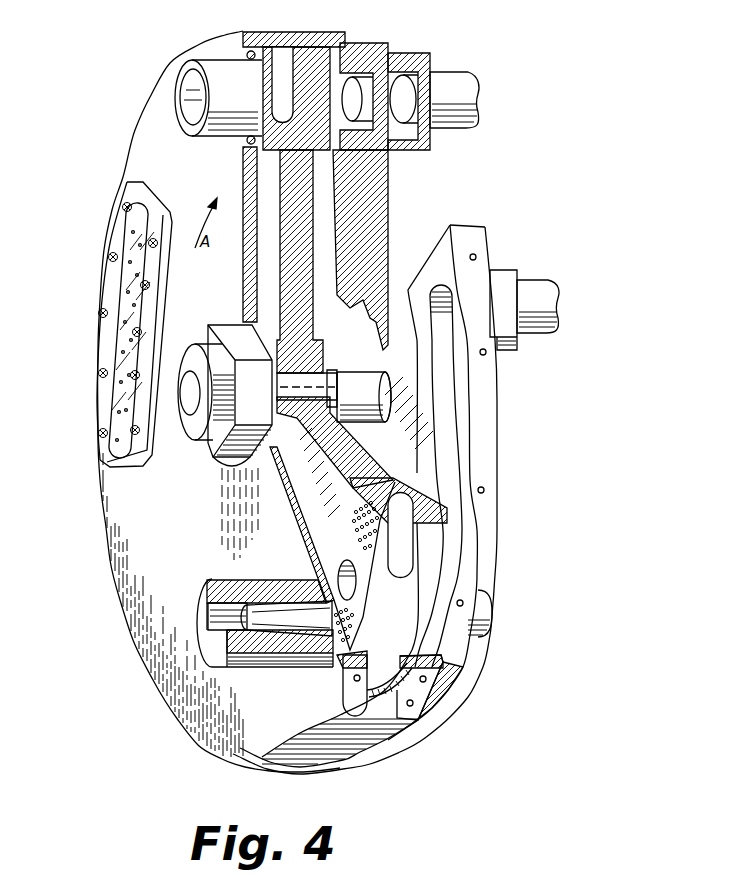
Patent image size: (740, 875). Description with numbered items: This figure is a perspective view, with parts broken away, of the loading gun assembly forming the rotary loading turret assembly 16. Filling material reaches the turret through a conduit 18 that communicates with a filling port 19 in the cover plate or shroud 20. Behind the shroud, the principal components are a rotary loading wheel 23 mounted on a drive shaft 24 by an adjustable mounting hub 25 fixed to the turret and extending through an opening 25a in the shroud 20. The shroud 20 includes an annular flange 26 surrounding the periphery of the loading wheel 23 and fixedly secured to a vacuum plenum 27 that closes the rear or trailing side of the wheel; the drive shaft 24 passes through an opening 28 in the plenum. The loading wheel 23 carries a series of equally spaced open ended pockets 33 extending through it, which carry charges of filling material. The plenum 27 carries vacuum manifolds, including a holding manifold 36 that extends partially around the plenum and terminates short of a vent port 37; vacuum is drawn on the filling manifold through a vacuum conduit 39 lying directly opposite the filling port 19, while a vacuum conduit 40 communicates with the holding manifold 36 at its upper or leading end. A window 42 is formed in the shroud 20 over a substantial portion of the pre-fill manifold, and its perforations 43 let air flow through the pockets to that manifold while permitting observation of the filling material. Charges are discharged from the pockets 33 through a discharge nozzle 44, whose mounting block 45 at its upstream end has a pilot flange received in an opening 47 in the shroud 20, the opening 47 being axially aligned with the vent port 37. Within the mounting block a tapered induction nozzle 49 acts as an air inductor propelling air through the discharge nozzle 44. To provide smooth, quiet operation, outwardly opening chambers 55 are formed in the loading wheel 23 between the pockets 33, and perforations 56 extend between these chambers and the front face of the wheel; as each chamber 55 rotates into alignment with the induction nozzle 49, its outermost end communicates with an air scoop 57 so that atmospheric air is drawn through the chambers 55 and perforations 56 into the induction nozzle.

The rotary loading turret assembly 16 is at (106, 611).
The conduit 18 is at (223, 140).
The filling port 19 is at (250, 52).
The shroud 20 is at (113, 530).
The rotary loading wheel 23 is at (310, 220).
The drive shaft 24 is at (303, 383).
The adjustable mounting hub 25 is at (208, 350).
The opening 25a is at (235, 463).
The annular flange 26 is at (300, 766).
The vacuum plenum 27 is at (390, 182).
The opening 28 is at (372, 422).
The pockets 33 is at (356, 587).
The holding manifold 36 is at (445, 380).
The vent port 37 is at (486, 625).
The vacuum conduit 39 is at (360, 110).
The vacuum conduit 40 is at (520, 283).
The window 42 is at (130, 230).
The perforations 43 is at (127, 292).
The discharge nozzle 44 is at (222, 627).
The mounting block 45 is at (238, 663).
The opening 47 is at (317, 647).
The tapered induction nozzle 49 is at (263, 607).
The outwardly opening chambers 55 is at (283, 57).
The perforations 56 is at (363, 520).
The air scoop 57 is at (410, 725).